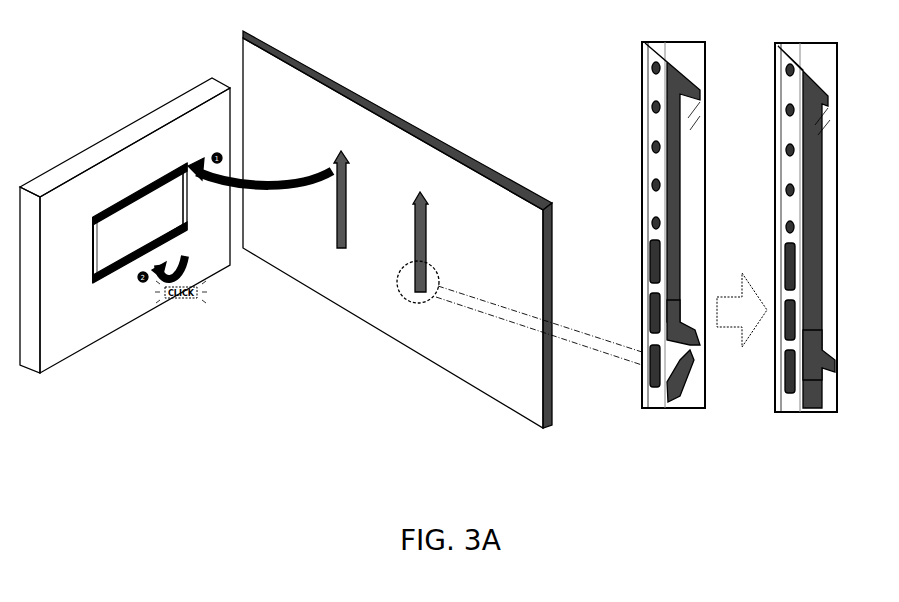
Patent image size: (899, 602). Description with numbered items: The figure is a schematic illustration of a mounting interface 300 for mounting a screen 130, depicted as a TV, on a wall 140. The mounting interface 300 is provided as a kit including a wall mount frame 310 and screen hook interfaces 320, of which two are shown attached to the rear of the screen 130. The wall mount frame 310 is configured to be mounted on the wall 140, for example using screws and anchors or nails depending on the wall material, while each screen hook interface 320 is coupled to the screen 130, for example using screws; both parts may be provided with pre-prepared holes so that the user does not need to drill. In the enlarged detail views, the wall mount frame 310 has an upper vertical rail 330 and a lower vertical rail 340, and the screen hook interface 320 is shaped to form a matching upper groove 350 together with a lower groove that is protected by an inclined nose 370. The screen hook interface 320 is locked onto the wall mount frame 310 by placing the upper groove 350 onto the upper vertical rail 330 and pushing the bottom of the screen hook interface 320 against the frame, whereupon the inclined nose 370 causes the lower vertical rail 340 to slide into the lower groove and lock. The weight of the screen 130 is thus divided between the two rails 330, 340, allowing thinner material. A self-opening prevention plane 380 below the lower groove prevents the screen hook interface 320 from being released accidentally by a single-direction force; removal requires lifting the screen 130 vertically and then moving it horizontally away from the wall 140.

The screen 130 is at (407, 121).
The wall 140 is at (158, 98).
The mounting interface 300 is at (108, 186).
The wall mount frame 310 is at (97, 282).
The screen hook interface 320 is at (410, 292).
The upper vertical rail 330 is at (820, 107).
The lower vertical rail 340 is at (818, 347).
The upper groove 350 is at (688, 105).
The inclined nose 370 is at (690, 336).
The self-opening prevention plane 380 is at (690, 353).